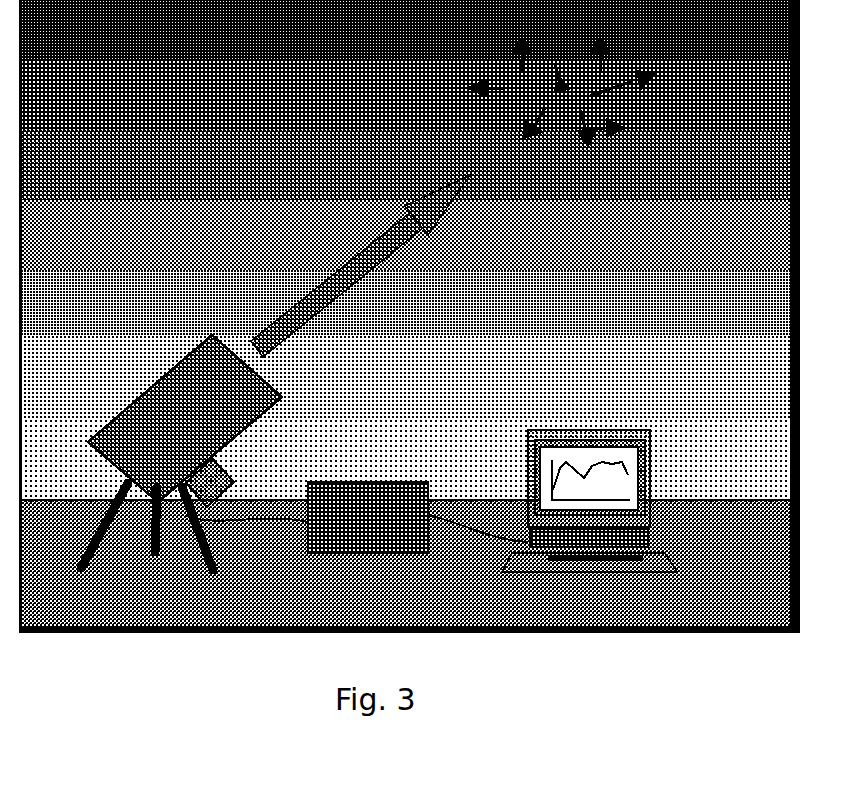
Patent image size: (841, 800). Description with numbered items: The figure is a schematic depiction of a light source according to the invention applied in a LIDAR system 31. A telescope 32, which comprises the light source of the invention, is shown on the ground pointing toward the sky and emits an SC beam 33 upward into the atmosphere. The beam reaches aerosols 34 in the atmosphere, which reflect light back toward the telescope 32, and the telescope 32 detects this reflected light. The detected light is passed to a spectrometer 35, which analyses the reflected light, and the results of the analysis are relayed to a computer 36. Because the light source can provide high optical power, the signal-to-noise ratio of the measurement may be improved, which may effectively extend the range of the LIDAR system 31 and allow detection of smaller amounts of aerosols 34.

The LIDAR system 31 is at (370, 360).
The telescope 32 is at (176, 409).
The SC beam 33 is at (337, 266).
The aerosols 34 is at (511, 92).
The spectrometer 35 is at (357, 508).
The computer 36 is at (553, 473).